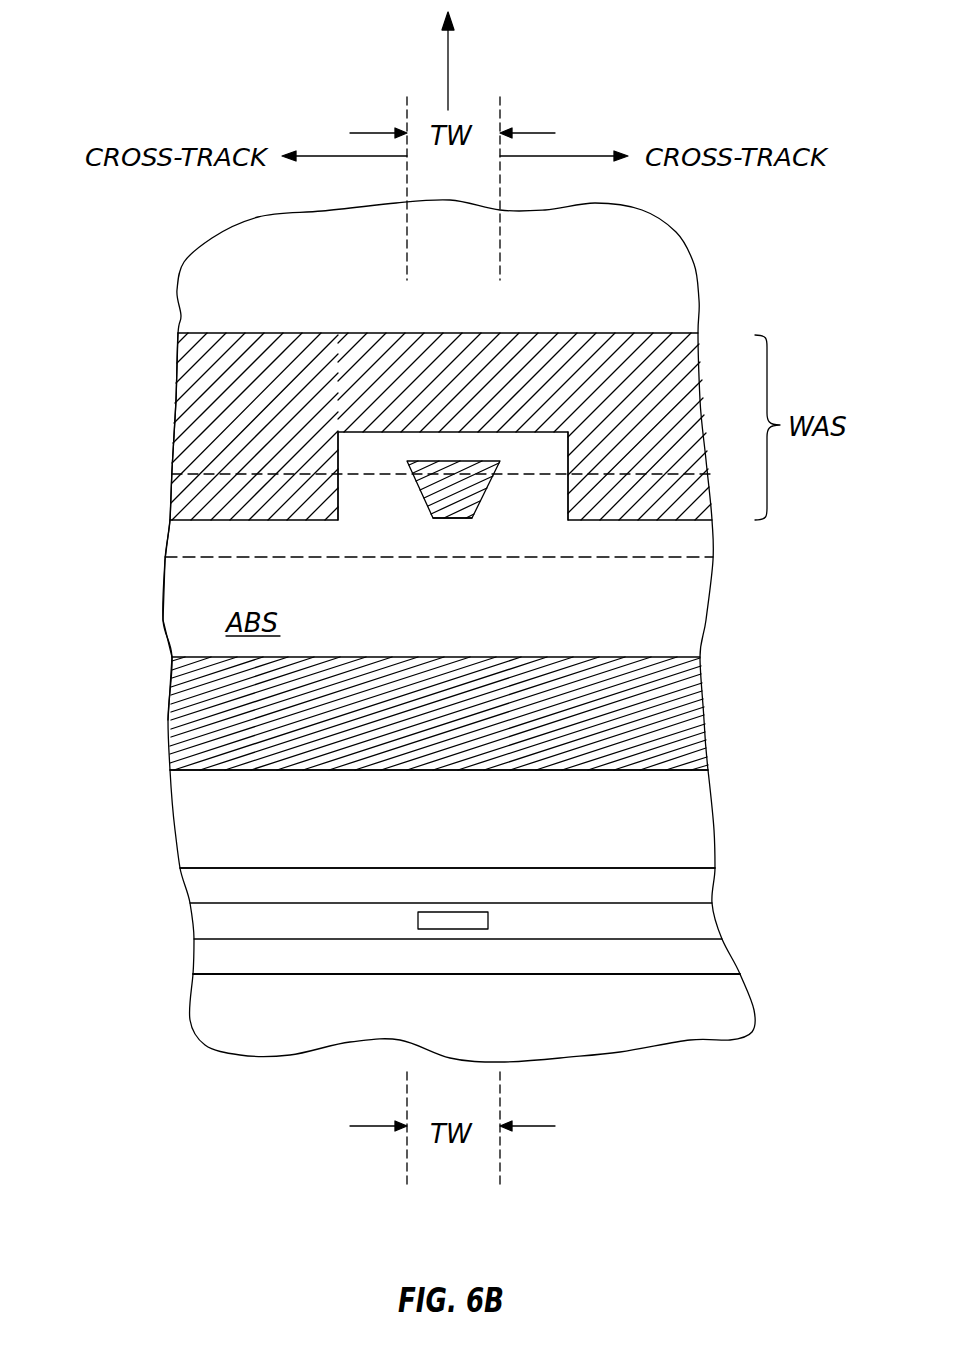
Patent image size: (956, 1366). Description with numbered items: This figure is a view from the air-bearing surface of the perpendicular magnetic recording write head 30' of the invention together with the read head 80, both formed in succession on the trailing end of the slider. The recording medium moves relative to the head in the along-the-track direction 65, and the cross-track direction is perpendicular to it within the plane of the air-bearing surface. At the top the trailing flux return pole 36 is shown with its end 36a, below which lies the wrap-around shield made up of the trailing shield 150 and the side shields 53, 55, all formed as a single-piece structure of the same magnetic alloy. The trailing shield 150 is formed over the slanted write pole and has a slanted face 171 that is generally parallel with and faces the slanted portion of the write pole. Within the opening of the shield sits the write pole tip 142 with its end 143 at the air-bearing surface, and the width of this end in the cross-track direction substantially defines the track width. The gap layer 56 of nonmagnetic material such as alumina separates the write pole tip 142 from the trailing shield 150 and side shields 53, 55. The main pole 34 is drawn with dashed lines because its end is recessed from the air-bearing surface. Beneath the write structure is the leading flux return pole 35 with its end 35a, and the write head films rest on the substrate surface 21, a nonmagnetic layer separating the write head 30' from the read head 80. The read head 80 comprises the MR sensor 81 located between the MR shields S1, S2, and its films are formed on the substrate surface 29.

The along-the-track direction 65 is at (448, 62).
The trailing flux return pole 36 is at (690, 240).
The end of trailing return pole 36a is at (684, 276).
The trailing shield 150 is at (556, 340).
The side shield 55 is at (177, 415).
The side shield 53 is at (680, 413).
The gap layer 56 is at (494, 447).
The slanted face 171 is at (418, 432).
The write pole tip 142 is at (490, 480).
The end of write pole tip 143 is at (455, 513).
The main pole 34 is at (149, 465).
The write head 30' is at (99, 535).
The leading flux return pole 35 is at (700, 710).
The end of leading return pole 35a is at (688, 740).
The substrate surface 21 is at (685, 770).
The MR shield S2 is at (705, 890).
The MR sensor 81 is at (488, 918).
The MR shield S1 is at (722, 958).
The substrate surface 29 is at (700, 975).
The MR read head 80 is at (153, 868).